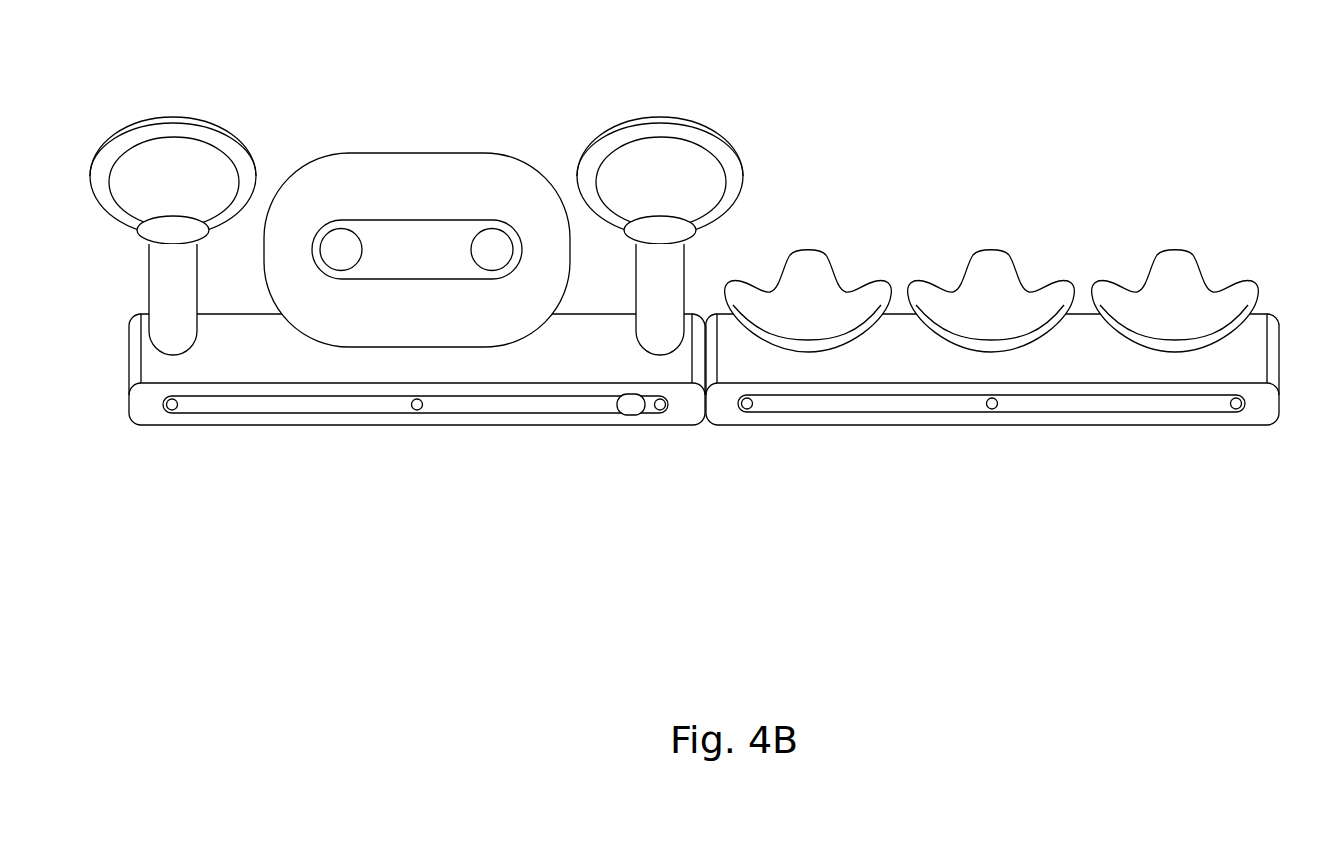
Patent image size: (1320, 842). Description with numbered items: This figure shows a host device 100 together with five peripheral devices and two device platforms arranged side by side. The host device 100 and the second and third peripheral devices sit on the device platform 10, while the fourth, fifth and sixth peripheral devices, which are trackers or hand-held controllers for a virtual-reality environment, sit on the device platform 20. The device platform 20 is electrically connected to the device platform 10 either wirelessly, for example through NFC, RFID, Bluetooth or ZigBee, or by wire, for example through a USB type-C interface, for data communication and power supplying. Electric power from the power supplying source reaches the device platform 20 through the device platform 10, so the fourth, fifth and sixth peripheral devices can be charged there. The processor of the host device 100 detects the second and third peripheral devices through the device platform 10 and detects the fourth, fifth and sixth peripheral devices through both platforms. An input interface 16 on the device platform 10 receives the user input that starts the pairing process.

The device platform 10 is at (303, 417).
The input interface 16 is at (628, 410).
The device platform 20 is at (887, 417).
The host device 100 is at (357, 163).